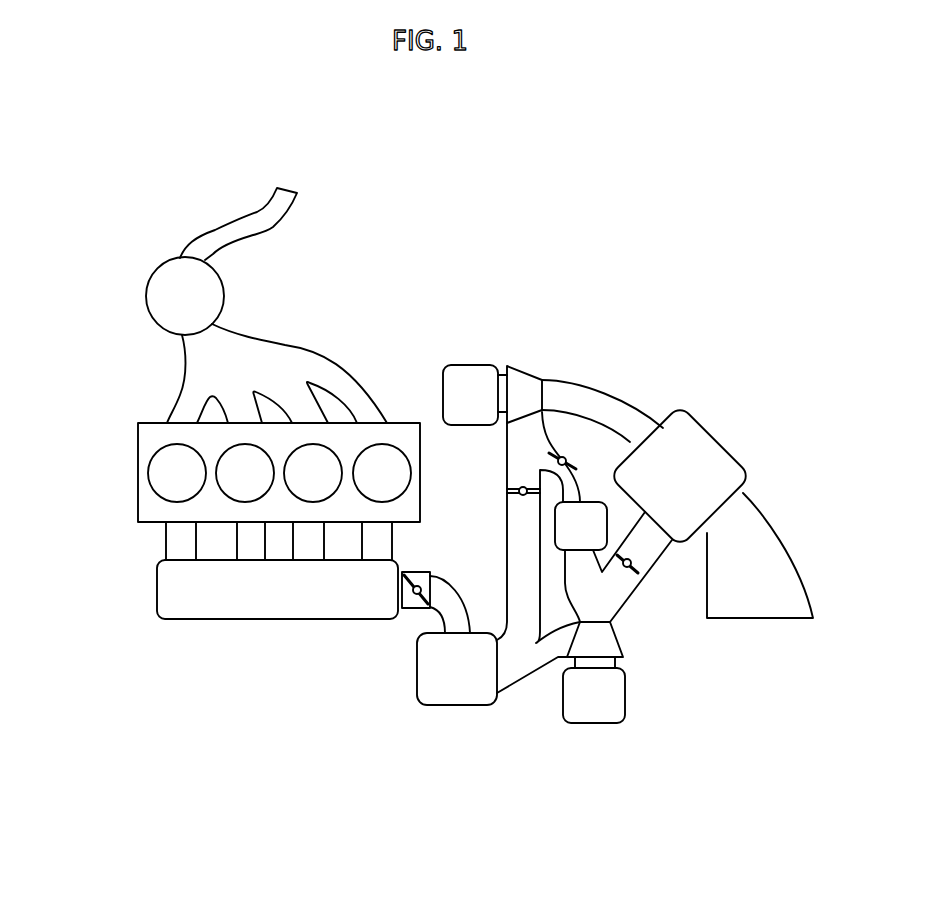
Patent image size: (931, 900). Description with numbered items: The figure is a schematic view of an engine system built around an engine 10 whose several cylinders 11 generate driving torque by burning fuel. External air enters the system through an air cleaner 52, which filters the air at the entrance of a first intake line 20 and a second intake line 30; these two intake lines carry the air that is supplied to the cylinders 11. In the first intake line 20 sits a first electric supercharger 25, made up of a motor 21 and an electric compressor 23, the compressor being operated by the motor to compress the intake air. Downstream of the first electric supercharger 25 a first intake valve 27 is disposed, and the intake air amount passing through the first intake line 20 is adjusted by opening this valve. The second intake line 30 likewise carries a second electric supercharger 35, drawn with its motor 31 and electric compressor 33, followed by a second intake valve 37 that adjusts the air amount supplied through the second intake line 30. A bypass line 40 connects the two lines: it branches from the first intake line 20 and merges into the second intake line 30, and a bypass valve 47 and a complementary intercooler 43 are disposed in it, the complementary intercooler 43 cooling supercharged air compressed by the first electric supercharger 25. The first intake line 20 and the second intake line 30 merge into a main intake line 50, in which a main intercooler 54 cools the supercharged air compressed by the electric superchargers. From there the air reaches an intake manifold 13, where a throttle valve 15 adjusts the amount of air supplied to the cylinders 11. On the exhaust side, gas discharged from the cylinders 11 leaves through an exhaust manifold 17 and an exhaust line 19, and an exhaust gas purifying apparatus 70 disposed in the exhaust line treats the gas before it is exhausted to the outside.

The engine 10 is at (116, 532).
The cylinder 11 is at (148, 474).
The intake manifold 13 is at (157, 589).
The throttle valve 15 is at (418, 571).
The exhaust manifold 17 is at (172, 404).
The exhaust pipe 19 is at (227, 220).
The exhaust gas purifying apparatus 70 is at (146, 296).
The first intake line 20 is at (601, 389).
The motor 21 is at (470, 365).
The compressor 23 is at (528, 373).
The first electric supercharger 25 is at (558, 315).
The first intake valve 27 is at (507, 491).
The second intake line 30 is at (658, 557).
The compressor housing 31 is at (595, 725).
The turbine housing 33 is at (623, 643).
The second electric supercharger 35 is at (695, 768).
The second intake valve 37 is at (632, 570).
The bypass line 40 is at (566, 588).
The complementary intercooler 43 is at (592, 502).
The bypass valve 47 is at (562, 455).
The main intake line 50 is at (437, 618).
The air cleaner 52 is at (725, 450).
The main intercooler 54 is at (457, 707).